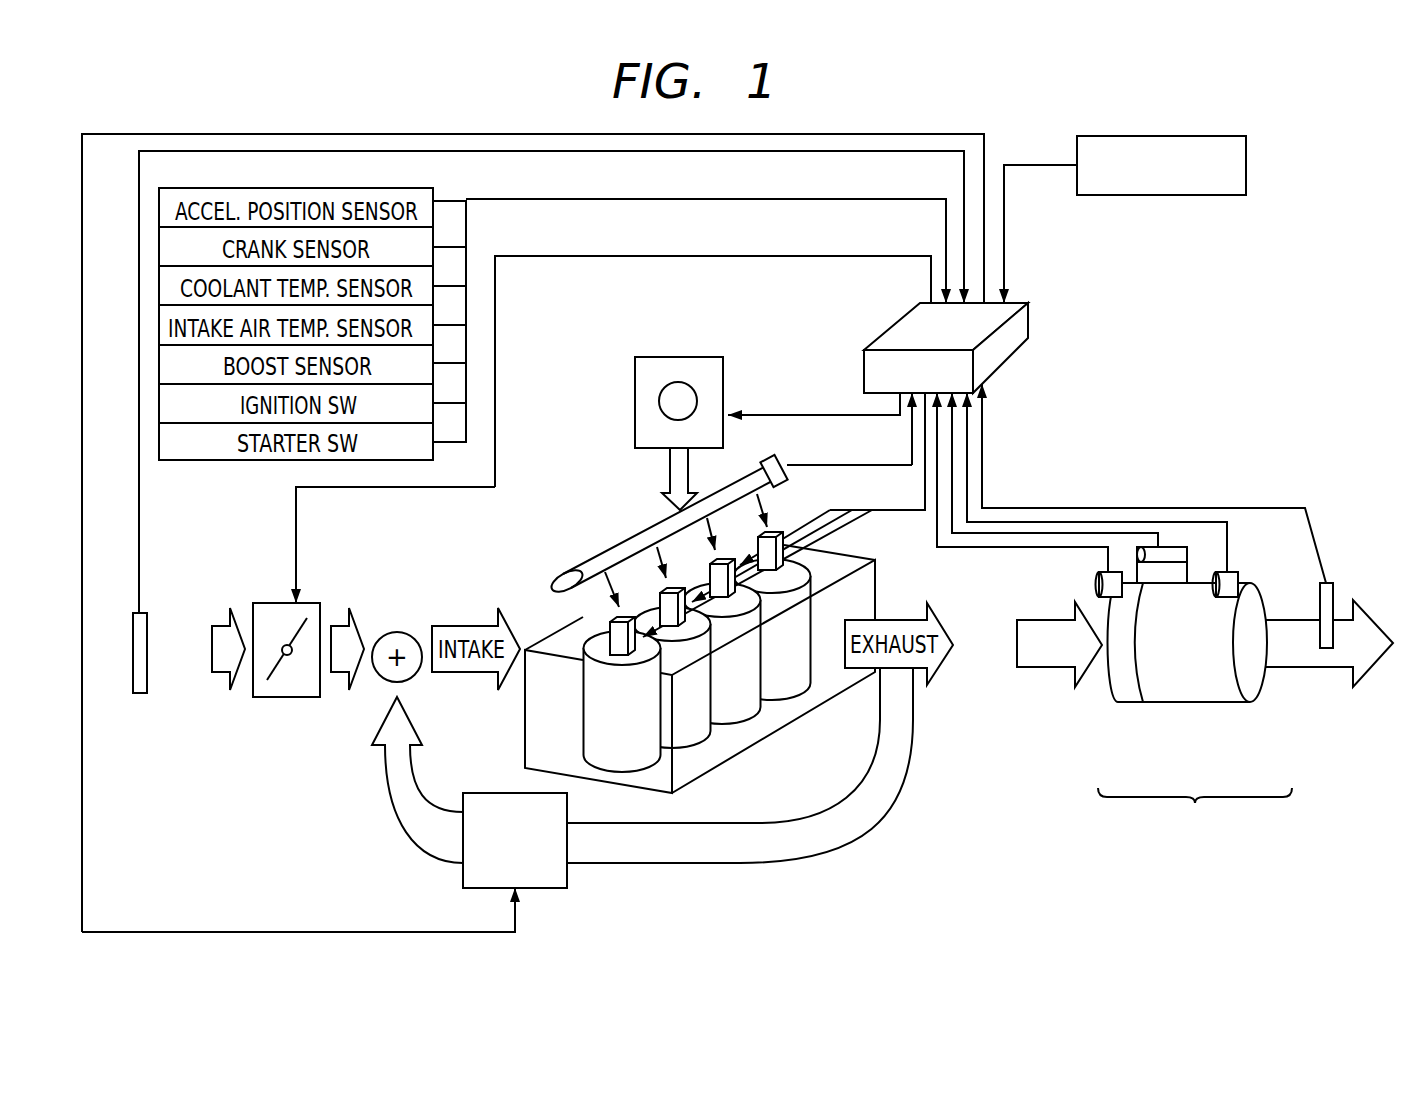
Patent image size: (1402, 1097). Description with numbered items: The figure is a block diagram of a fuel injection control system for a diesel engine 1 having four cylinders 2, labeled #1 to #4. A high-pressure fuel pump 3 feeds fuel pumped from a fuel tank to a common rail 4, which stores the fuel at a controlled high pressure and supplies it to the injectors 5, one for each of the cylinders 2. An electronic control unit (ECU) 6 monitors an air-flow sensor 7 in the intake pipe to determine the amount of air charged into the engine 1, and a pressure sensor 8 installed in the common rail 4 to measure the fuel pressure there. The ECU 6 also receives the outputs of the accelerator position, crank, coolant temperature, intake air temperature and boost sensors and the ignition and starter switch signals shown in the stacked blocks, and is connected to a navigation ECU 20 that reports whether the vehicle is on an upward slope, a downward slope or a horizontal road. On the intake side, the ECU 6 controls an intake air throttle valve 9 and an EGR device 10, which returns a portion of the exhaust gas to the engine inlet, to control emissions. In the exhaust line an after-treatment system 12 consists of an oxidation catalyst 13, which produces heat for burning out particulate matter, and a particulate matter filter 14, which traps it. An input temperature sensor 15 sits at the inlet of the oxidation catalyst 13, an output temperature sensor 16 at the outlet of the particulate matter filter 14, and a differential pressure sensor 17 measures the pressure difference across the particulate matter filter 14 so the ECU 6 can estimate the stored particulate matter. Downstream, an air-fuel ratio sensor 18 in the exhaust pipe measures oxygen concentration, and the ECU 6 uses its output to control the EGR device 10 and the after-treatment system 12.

The diesel engine 1 is at (565, 638).
The cylinders 2 is at (782, 678).
The high-pressure fuel pump 3 is at (697, 357).
The common rail 4 is at (627, 542).
The injectors 5 is at (790, 530).
The electronic control unit (ECU) 6 is at (1028, 318).
The air-flow sensor 7 is at (146, 695).
The pressure sensor 8 is at (768, 455).
The intake air throttle valve 9 is at (277, 603).
The EGR device 10 is at (497, 793).
The after-treatment system 12 is at (1195, 812).
The oxidation catalyst 13 is at (1125, 702).
The particulate matter filter 14 is at (1200, 702).
The input temperature sensor 15 is at (1097, 580).
The output temperature sensor 16 is at (1235, 572).
The differential pressure sensor 17 is at (1153, 547).
The air-fuel ratio sensor 18 is at (1328, 648).
The navigation ECU 20 is at (1246, 165).